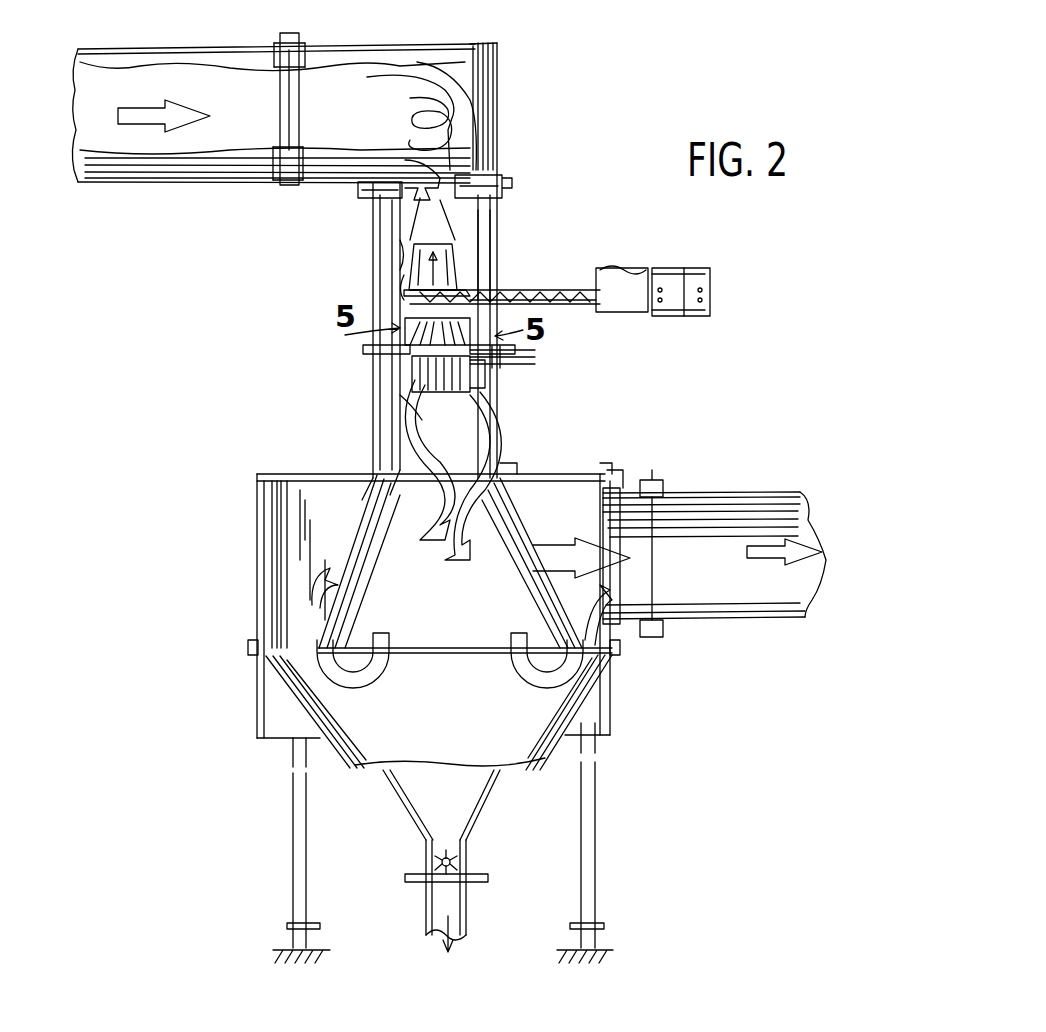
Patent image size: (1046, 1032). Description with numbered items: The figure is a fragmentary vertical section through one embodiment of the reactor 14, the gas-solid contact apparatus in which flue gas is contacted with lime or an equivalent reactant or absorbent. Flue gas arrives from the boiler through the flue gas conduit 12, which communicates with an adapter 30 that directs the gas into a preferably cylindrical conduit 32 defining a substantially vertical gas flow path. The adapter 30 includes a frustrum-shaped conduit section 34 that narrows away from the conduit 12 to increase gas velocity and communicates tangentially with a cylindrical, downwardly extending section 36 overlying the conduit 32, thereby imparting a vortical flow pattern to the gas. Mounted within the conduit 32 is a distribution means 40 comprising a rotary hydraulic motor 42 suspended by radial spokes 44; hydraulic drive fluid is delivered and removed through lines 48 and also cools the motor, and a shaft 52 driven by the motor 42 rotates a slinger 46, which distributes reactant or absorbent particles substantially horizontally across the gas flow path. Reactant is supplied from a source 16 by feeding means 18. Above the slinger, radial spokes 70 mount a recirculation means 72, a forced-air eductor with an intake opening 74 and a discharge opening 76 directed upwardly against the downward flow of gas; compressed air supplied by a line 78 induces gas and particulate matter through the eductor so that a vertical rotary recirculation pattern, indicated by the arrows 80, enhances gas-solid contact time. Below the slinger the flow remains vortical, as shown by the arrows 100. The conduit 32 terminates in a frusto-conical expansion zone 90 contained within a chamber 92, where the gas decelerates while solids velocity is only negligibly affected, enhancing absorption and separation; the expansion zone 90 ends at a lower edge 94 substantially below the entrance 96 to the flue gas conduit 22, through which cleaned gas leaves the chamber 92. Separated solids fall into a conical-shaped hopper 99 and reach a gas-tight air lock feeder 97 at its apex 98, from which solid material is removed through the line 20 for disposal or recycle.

The flue gas conduit 12 is at (208, 58).
The frustrum-shaped conduit section 34 is at (343, 58).
The adapter 30 is at (505, 98).
The cylindrical downwardly extending section 36 is at (487, 135).
The arrows 80 is at (373, 209).
The discharge opening 76 is at (466, 224).
The cylindrical conduit 32 is at (505, 238).
The radial spokes 70 is at (382, 270).
The recirculation means 72 is at (410, 281).
The intake opening 74 is at (470, 293).
The feeding means 18 is at (588, 275).
The source 16 is at (640, 274).
The compressed air line 78 is at (586, 272).
The distribution means 40 is at (490, 332).
The slinger 46 is at (380, 337).
The hydraulic lines 48 is at (538, 348).
The radial spokes 44 is at (410, 362).
The rotary hydraulic motor 42 is at (460, 383).
The shaft 52 is at (412, 405).
The reactor 14 is at (255, 505).
The chamber 92 is at (270, 554).
The arrows 100 is at (398, 480).
The frusto-conical expansion zone 90 is at (528, 522).
The lower edge 94 is at (450, 652).
The conical-shaped hopper 99 is at (595, 700).
The apex 98 is at (488, 810).
The air lock feeder 97 is at (470, 857).
The line 20 is at (470, 906).
The flue gas conduit 22 is at (706, 495).
The entrance 96 is at (620, 510).